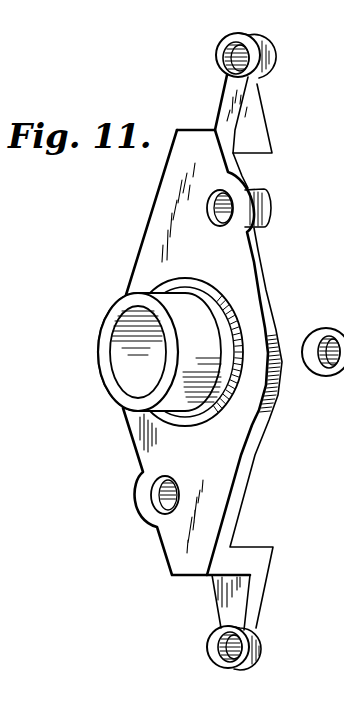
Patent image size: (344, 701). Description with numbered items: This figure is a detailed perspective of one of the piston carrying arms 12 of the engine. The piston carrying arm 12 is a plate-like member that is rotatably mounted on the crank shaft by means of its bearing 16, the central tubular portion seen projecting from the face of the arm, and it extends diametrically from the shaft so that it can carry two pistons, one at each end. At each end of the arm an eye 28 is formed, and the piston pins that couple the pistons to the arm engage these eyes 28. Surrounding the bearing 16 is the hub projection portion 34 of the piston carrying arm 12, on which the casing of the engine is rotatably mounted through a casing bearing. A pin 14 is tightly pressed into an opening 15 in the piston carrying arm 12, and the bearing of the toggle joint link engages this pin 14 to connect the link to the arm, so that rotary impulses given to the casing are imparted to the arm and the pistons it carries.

The piston carrying arm 12 is at (152, 236).
The pin 14 is at (272, 204).
The opening 15 is at (210, 228).
The bearing 16 is at (128, 326).
The eye 28 is at (222, 57).
The hub projection portion 34 is at (182, 404).